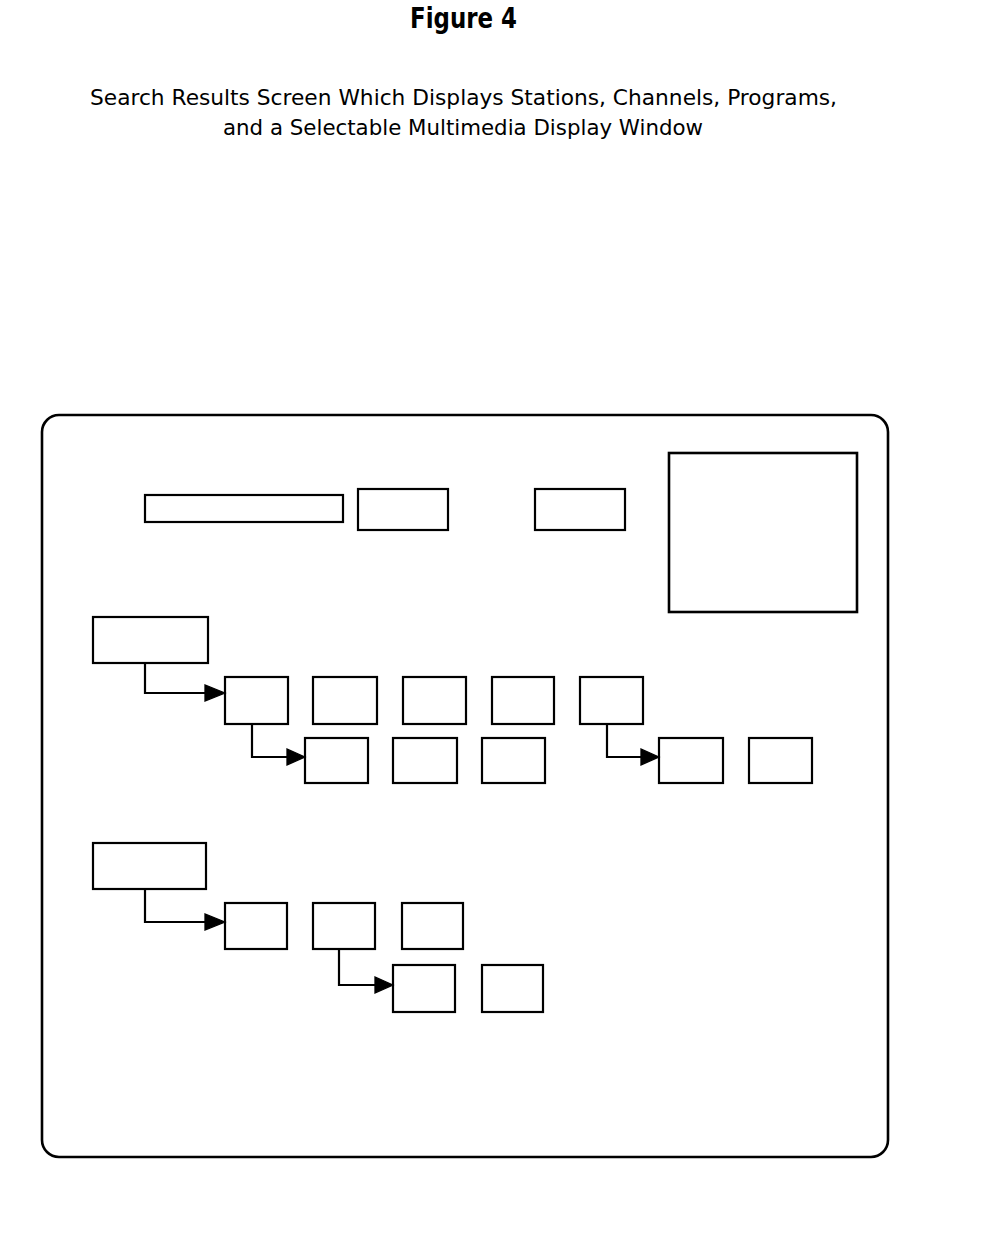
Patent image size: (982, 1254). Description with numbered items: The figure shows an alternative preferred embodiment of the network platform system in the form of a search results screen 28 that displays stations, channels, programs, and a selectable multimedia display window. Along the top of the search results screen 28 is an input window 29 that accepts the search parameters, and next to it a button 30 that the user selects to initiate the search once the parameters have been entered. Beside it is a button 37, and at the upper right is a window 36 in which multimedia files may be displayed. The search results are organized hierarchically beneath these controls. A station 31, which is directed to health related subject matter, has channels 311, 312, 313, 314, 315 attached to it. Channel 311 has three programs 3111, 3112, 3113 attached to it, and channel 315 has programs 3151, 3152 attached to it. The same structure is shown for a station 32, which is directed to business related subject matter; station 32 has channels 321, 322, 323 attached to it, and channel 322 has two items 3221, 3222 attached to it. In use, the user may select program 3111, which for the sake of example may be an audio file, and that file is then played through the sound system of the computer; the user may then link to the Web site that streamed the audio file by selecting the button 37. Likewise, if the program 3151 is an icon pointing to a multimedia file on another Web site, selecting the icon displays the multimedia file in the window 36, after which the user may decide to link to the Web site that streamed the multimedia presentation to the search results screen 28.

The search results screen 28 is at (204, 333).
The input window 29 is at (207, 495).
The button 30 is at (420, 489).
The button 37 is at (597, 489).
The window 36 is at (723, 612).
The station 31 is at (162, 617).
The station 32 is at (152, 843).
The channel 311 is at (230, 677).
The channel 312 is at (318, 677).
The channel 313 is at (408, 677).
The channel 314 is at (497, 677).
The channel 315 is at (585, 677).
The program 3111 is at (322, 783).
The program 3112 is at (410, 783).
The program 3113 is at (498, 783).
The program 3151 is at (675, 783).
The program 3152 is at (765, 783).
The channel 321 is at (230, 903).
The channel 322 is at (318, 903).
The channel 323 is at (407, 903).
The program 3221 is at (410, 1012).
The program 3222 is at (498, 1012).